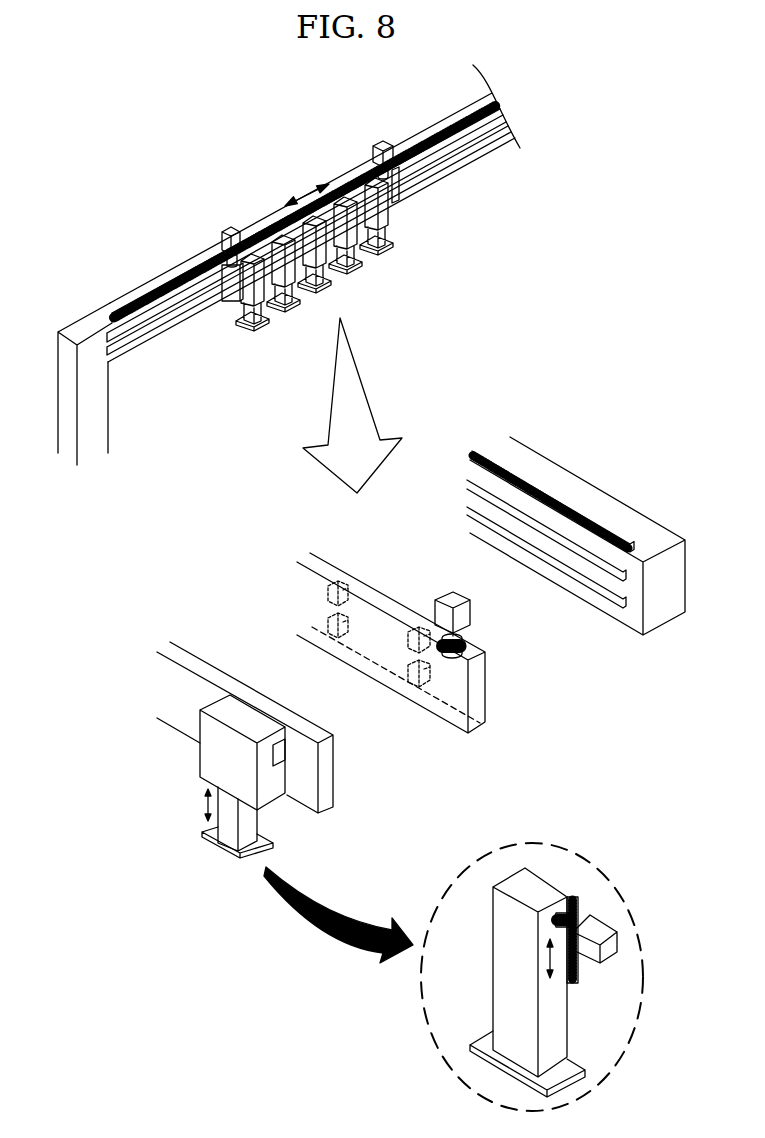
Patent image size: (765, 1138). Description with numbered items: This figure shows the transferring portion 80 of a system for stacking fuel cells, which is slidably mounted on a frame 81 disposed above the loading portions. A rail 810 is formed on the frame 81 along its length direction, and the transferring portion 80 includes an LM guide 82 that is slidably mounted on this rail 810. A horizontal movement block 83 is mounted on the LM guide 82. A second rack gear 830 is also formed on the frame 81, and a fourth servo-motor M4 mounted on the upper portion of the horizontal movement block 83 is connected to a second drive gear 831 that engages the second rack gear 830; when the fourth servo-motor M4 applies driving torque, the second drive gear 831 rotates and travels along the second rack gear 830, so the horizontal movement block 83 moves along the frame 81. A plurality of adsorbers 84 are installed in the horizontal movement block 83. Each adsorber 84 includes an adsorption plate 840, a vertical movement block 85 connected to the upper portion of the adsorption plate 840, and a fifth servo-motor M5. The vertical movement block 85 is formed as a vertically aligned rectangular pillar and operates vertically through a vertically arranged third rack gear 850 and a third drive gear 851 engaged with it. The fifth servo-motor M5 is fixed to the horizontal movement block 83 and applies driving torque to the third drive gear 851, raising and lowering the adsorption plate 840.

The transferring portion 80 is at (137, 217).
The frame 81 is at (108, 306).
The rail 810 is at (174, 315).
The second rack gear 830 is at (523, 480).
The second drive gear 831 is at (476, 665).
The LM guide 82 is at (408, 667).
The horizontal movement block 83 is at (207, 670).
The adsorber 84 is at (272, 820).
The vertical movement block 85 is at (230, 837).
The adsorption plate 840 is at (247, 857).
The third rack gear 850 is at (574, 902).
The third drive gear 851 is at (559, 911).
The fourth servo-motor M4 is at (230, 229).
The fifth servo-motor M5 is at (282, 753).